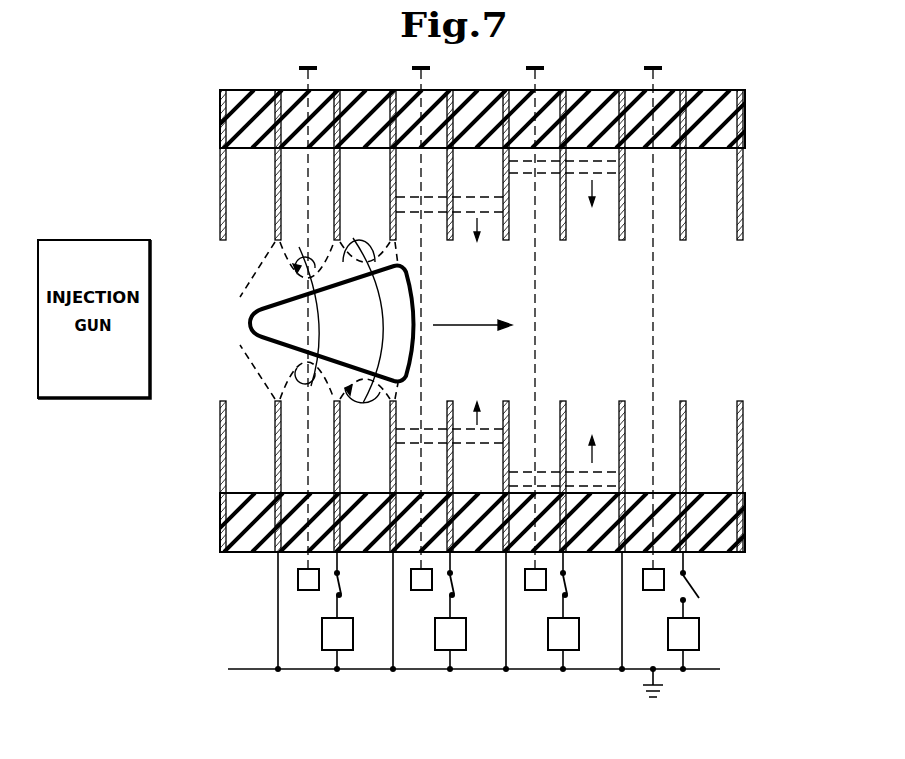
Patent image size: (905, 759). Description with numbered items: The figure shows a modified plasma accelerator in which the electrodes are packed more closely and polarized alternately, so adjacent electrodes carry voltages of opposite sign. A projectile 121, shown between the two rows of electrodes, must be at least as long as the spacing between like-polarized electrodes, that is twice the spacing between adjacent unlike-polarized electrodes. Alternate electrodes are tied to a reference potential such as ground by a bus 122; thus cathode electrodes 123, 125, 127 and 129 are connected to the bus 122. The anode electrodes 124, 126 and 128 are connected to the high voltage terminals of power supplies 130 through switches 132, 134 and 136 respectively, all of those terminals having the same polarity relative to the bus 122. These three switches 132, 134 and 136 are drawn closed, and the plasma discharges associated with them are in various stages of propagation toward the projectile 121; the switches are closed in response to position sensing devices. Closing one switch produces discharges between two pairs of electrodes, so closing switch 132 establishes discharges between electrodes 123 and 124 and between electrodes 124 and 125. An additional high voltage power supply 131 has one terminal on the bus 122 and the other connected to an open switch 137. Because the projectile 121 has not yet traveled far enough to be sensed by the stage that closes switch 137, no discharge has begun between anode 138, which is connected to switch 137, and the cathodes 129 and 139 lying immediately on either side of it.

The projectile 121 is at (405, 300).
The bus 122 is at (542, 672).
The cathode electrode 123 is at (275, 430).
The anode electrode 124 is at (340, 452).
The cathode electrode 125 is at (390, 419).
The anode electrode 126 is at (449, 400).
The cathode electrode 127 is at (506, 400).
The anode electrode 128 is at (563, 400).
The cathode electrode 129 is at (622, 400).
The power supply 130 is at (596, 618).
The high voltage power supply 131 is at (701, 632).
The switch 132 is at (341, 586).
The switch 134 is at (454, 586).
The switch 136 is at (567, 586).
The switch 137 is at (695, 584).
The anode 138 is at (686, 400).
The cathode 139 is at (743, 401).